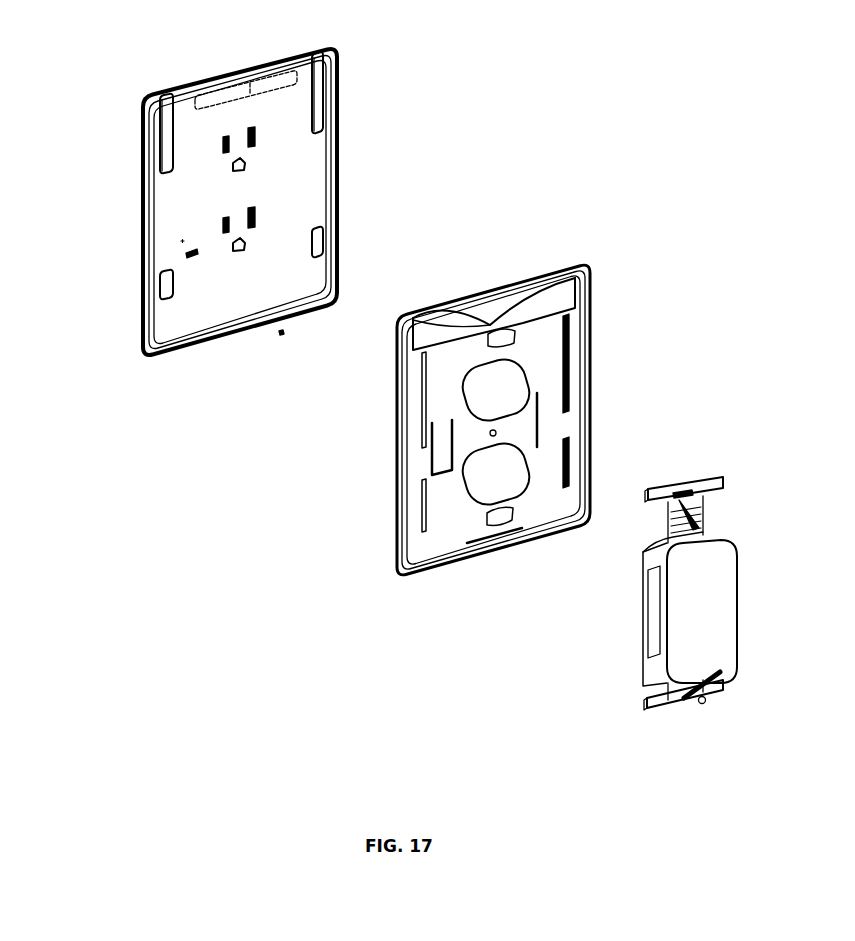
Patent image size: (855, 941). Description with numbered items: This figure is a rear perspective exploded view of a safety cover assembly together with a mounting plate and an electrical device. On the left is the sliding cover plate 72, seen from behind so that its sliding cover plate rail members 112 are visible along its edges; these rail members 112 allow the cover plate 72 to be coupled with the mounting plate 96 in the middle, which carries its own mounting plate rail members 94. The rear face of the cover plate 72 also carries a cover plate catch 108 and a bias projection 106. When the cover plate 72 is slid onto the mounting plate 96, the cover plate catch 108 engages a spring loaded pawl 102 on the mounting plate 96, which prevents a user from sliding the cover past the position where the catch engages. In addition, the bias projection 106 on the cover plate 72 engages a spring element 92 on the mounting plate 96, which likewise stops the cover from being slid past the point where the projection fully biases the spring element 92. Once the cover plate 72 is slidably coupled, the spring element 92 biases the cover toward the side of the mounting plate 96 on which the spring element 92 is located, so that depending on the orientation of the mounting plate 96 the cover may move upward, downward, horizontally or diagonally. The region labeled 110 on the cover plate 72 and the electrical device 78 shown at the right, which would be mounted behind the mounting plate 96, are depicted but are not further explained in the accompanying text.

The sliding cover plate 72 is at (177, 220).
The bias projection 106 is at (246, 70).
The cover plate catch 108 is at (186, 257).
The inner recess 110 is at (200, 308).
The sliding cover plate rail members 112 is at (318, 258).
The spring element 92 is at (460, 297).
The mounting plate rail members 94 is at (572, 408).
The mounting plate 96 is at (568, 512).
The spring loaded pawl 102 is at (427, 448).
The electrical receptacle 78 is at (673, 605).